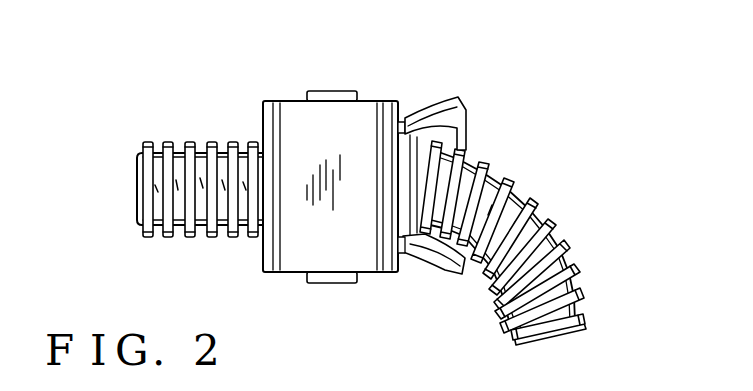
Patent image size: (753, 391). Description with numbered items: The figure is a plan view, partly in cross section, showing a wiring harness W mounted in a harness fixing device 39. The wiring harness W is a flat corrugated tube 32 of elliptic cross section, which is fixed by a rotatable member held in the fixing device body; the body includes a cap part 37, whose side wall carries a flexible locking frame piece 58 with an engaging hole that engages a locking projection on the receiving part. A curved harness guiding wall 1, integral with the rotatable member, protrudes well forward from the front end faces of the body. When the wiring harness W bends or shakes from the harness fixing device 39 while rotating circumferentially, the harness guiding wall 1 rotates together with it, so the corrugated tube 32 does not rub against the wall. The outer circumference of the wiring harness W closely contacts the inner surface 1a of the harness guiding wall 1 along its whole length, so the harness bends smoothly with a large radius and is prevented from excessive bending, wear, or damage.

The cap part 37 is at (283, 101).
The flexible locking frame piece 58 is at (329, 91).
The harness fixing device 39 is at (383, 82).
The harness guiding wall 1 is at (443, 110).
The inner surface 1a is at (423, 258).
The flat corrugated tube 32 is at (537, 224).
The wiring harness W is at (562, 221).